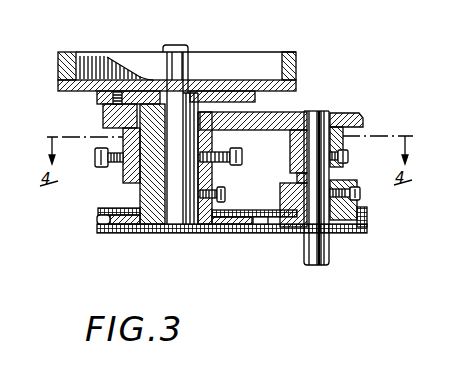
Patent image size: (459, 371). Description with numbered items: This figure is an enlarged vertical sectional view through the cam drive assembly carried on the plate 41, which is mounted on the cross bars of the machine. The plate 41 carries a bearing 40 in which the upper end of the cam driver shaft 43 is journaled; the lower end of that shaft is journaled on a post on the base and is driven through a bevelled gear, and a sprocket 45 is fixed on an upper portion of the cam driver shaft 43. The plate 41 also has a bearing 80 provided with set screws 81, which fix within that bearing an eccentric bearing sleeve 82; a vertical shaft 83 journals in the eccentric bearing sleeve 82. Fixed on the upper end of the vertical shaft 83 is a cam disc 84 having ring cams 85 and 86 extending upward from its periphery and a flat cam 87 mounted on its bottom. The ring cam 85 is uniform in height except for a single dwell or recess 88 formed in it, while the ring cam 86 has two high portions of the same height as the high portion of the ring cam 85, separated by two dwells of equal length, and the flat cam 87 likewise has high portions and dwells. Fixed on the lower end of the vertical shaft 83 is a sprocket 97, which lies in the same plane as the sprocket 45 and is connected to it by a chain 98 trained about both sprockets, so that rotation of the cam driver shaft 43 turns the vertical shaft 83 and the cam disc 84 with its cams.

The bearing 40 is at (343, 143).
The plate 41 is at (283, 120).
The cam driver shaft 43 is at (329, 258).
The sprocket 45 is at (350, 209).
The bearing 80 is at (221, 147).
The set screws 81 is at (101, 167).
The eccentric bearing sleeve 82 is at (140, 183).
The vertical shaft 83 is at (175, 218).
The cam disc 84 is at (294, 84).
The ring cam 85 is at (288, 53).
The ring cam 86 is at (291, 56).
The flat cam 87 is at (97, 94).
The dwell or recess 88 is at (255, 77).
The sprocket 97 is at (132, 233).
The chain 98 is at (265, 233).